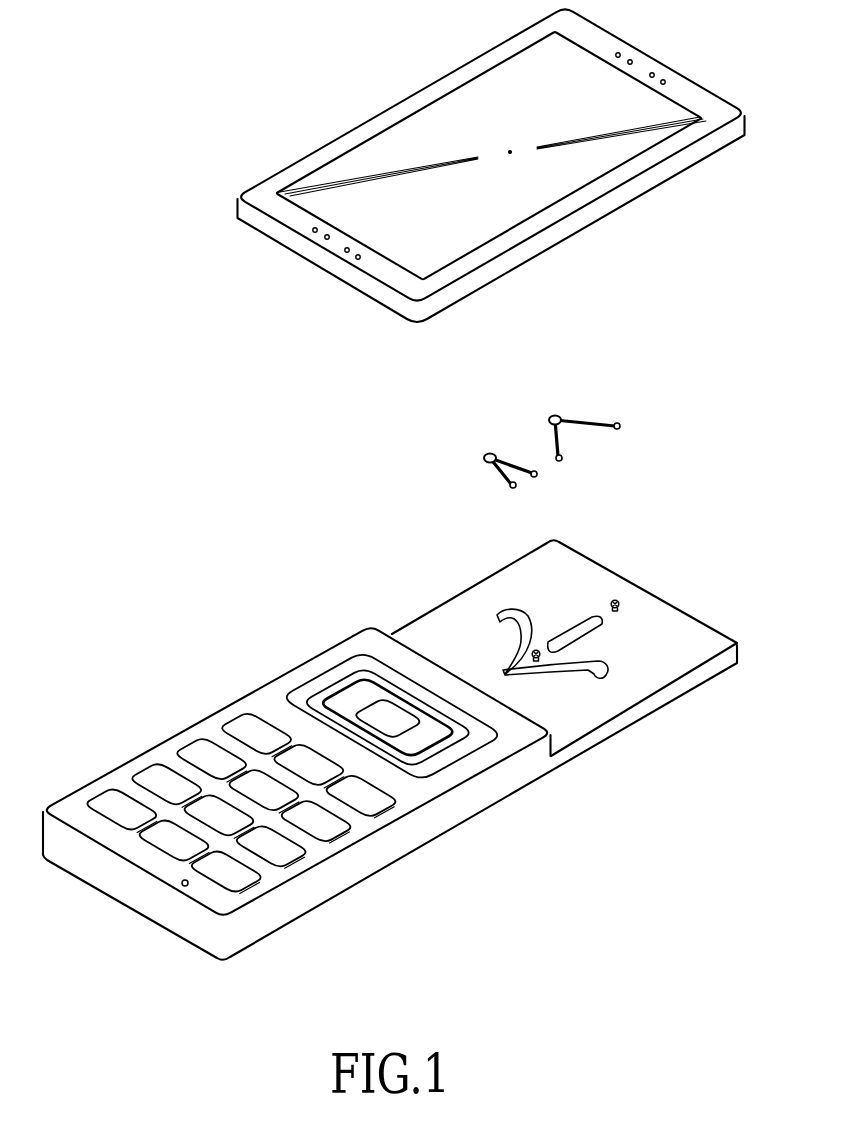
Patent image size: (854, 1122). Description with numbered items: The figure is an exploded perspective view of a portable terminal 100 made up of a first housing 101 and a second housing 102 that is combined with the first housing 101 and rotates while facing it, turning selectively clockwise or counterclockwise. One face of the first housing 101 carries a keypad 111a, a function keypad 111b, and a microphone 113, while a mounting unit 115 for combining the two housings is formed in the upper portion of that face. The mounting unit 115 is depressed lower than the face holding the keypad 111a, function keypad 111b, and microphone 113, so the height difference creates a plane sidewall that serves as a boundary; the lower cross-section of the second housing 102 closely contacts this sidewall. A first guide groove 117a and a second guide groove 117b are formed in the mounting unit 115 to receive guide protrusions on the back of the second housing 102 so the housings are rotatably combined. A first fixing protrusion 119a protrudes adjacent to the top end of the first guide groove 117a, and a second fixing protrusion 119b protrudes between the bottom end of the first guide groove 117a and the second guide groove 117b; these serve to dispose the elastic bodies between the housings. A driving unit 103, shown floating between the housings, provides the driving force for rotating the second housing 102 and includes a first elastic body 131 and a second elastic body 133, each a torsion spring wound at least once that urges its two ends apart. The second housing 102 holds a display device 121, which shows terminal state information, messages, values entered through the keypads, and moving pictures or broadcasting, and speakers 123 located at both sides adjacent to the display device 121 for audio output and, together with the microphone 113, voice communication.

The portable terminal 100 is at (70, 455).
The first housing 101 is at (429, 721).
The second housing 102 is at (480, 165).
The driving unit 103 is at (483, 426).
The keypad 111a is at (226, 697).
The function keypad 111b is at (354, 617).
The microphone 113 is at (181, 884).
The mounting unit 115 is at (674, 663).
The first guide groove 117a is at (582, 620).
The second guide groove 117b is at (614, 675).
The first fixing protrusion 119a is at (618, 603).
The second fixing protrusion 119b is at (537, 658).
The display device 121 is at (523, 199).
The speakers 123 is at (644, 67).
The first elastic body 131 is at (588, 421).
The second elastic body 133 is at (492, 468).